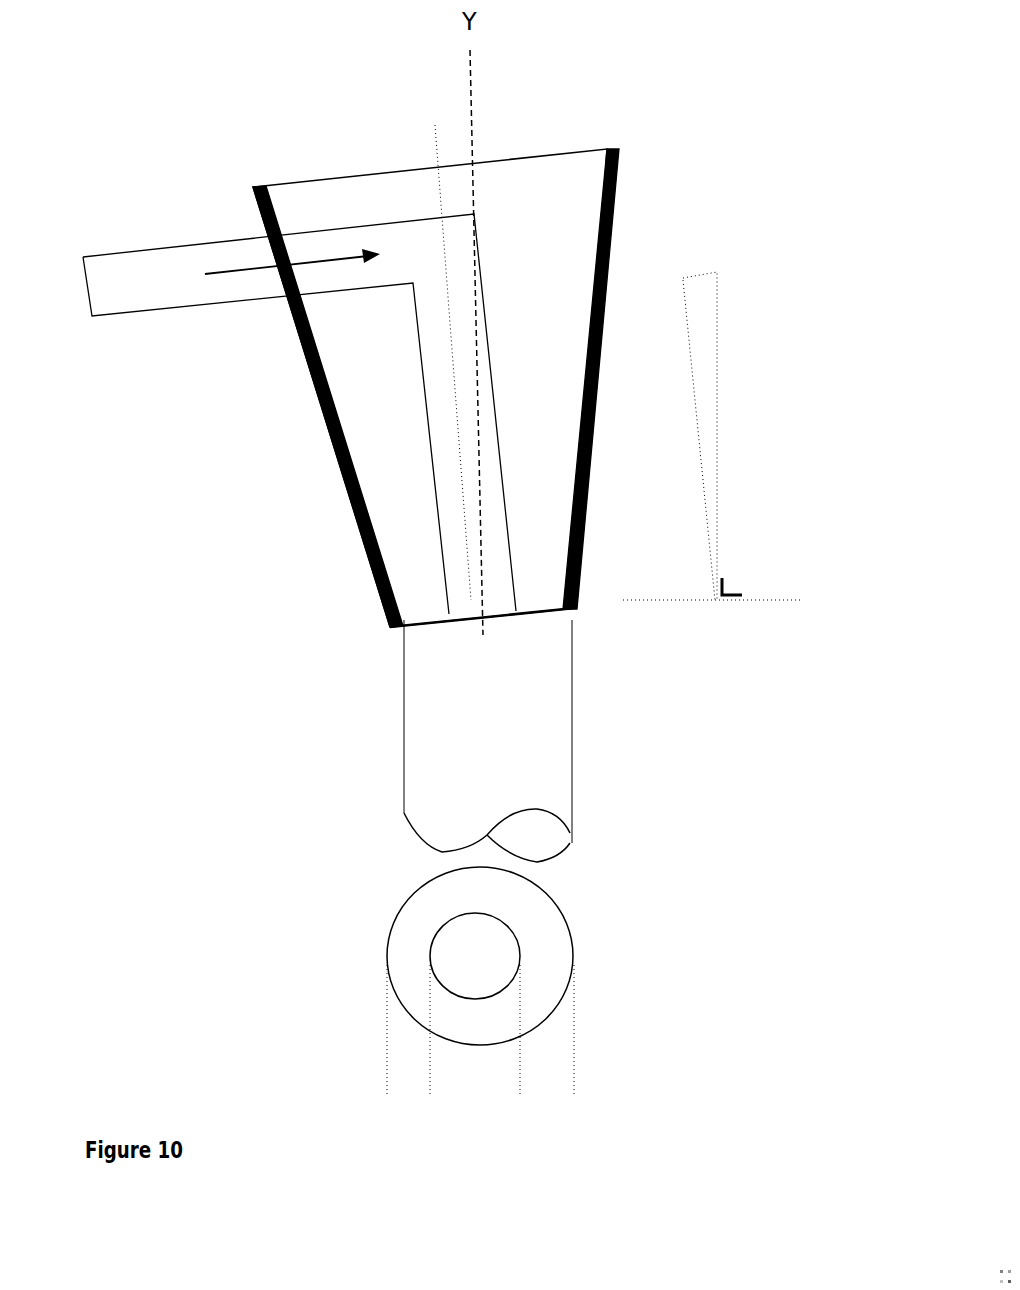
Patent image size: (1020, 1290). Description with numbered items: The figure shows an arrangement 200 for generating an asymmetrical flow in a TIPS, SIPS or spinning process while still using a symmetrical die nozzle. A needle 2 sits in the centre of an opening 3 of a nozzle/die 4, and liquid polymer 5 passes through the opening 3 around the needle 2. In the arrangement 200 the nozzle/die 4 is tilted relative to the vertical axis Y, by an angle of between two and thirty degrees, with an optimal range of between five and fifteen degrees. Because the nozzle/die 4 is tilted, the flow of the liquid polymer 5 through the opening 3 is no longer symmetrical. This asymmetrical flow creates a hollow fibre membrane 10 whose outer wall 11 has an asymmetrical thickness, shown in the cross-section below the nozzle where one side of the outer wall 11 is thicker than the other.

The arrangement 200 is at (155, 210).
The liquid polymer 5 is at (368, 378).
The needle 2 is at (450, 560).
The nozzle/die 4 is at (380, 632).
The opening 3 is at (543, 605).
The hollow fibre membrane 10 is at (405, 902).
The outer wall 11 is at (542, 928).